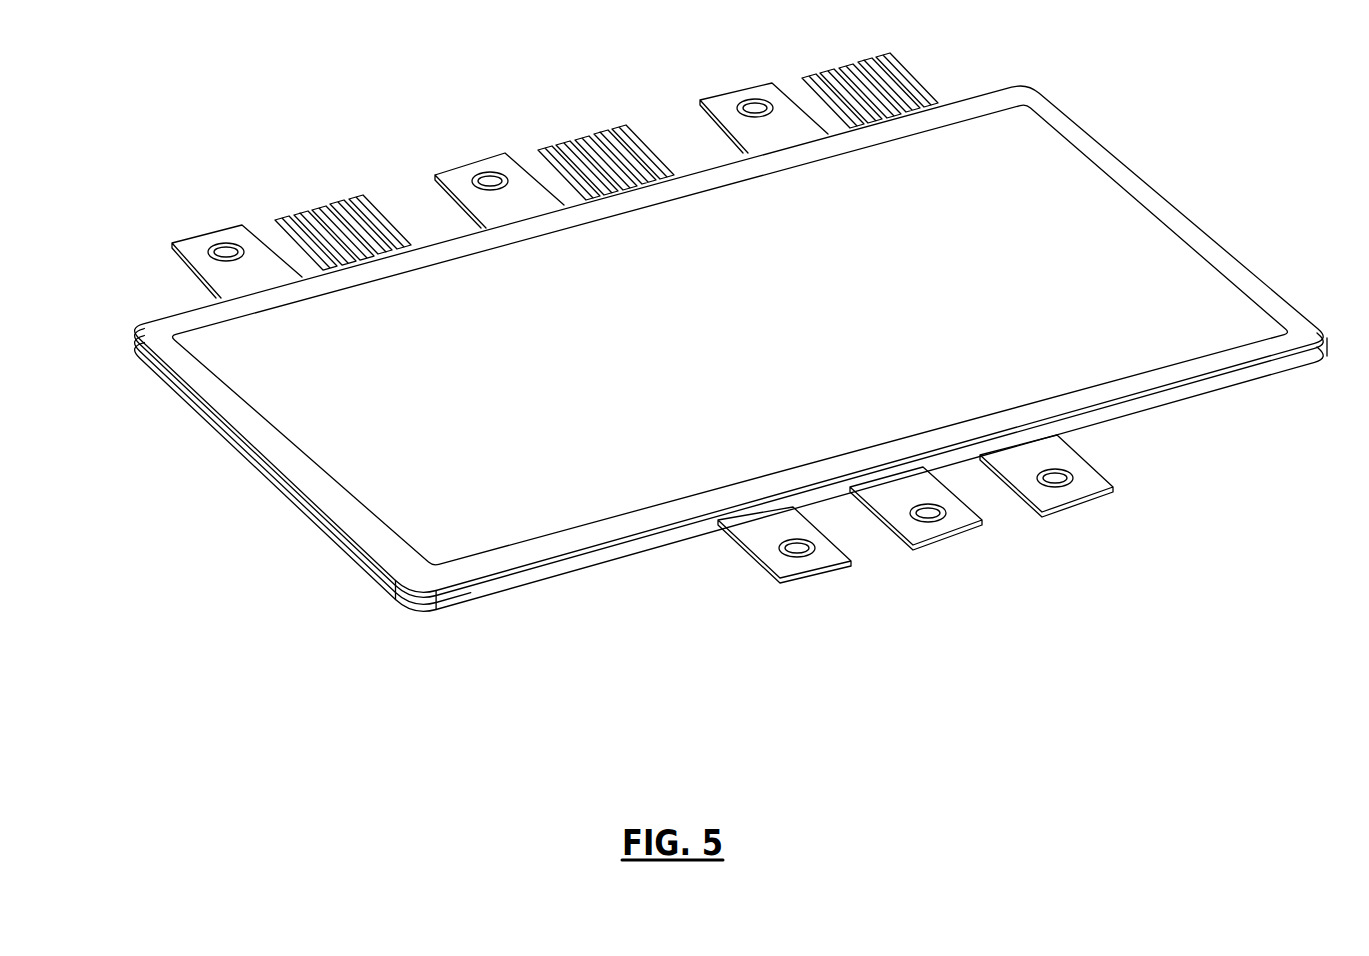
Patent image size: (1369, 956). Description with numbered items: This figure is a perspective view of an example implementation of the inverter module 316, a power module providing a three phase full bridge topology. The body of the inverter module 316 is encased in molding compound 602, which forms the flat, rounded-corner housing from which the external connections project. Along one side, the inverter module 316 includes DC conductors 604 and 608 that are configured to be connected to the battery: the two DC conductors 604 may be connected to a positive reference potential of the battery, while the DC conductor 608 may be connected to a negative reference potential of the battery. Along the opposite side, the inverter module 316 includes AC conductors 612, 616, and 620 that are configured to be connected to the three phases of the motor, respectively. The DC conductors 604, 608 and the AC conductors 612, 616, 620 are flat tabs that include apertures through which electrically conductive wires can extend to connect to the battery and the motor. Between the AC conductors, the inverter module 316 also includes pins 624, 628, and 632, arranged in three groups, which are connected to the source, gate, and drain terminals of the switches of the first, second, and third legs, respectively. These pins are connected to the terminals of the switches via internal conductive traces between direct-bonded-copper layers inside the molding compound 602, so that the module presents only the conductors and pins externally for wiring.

The inverter module 316 is at (193, 102).
The molding compound 602 is at (325, 442).
The DC conductor 604 is at (777, 563).
The DC conductor 608 is at (922, 537).
The AC conductor 612 is at (197, 257).
The AC conductor 616 is at (503, 168).
The AC conductor 620 is at (767, 98).
The pins 624 is at (296, 183).
The pins 628 is at (533, 107).
The pins 632 is at (802, 38).